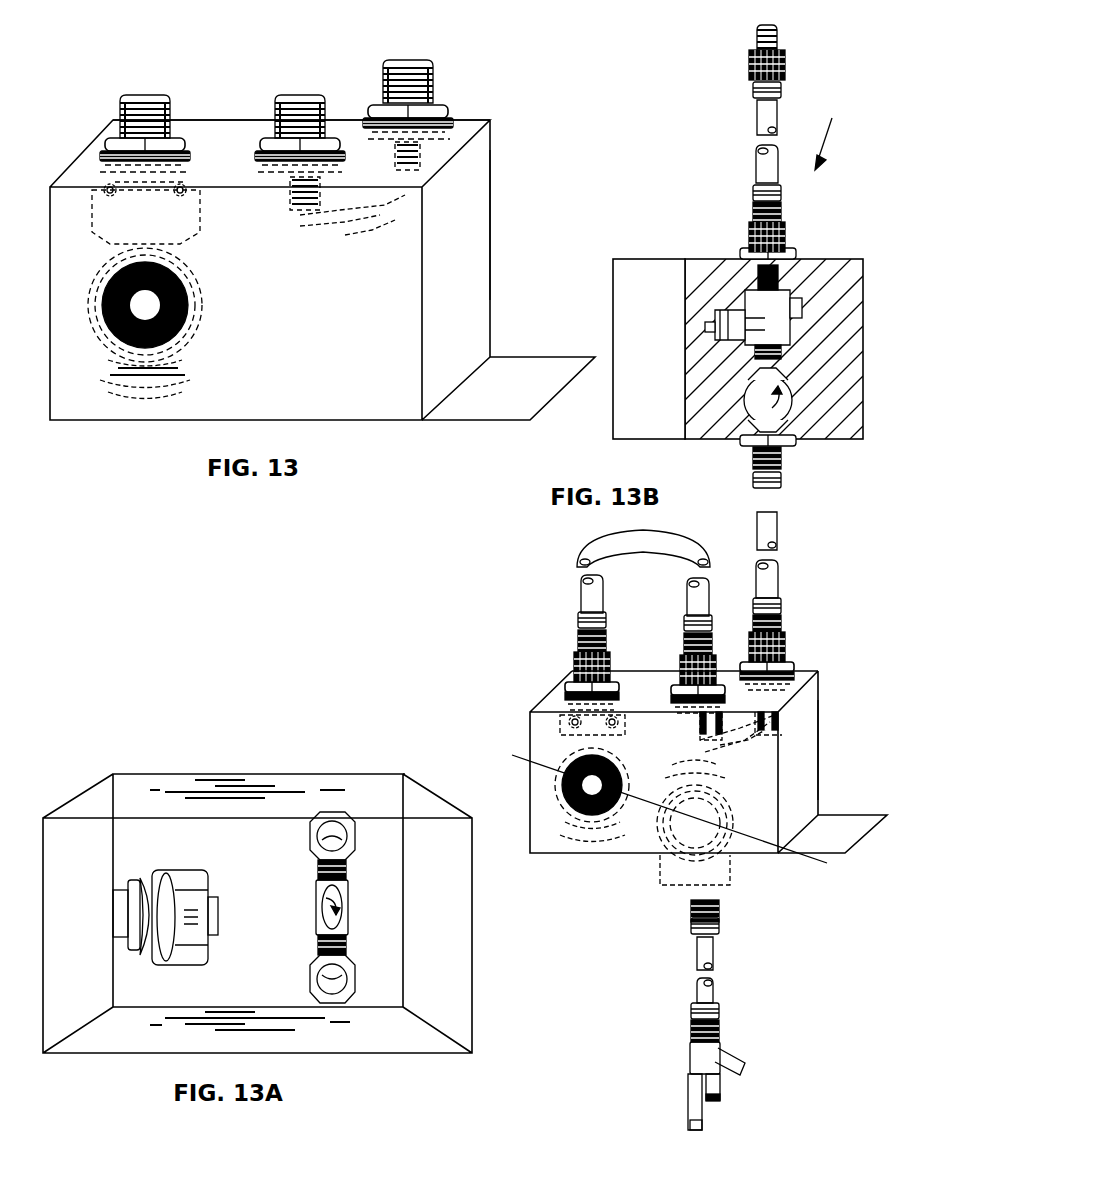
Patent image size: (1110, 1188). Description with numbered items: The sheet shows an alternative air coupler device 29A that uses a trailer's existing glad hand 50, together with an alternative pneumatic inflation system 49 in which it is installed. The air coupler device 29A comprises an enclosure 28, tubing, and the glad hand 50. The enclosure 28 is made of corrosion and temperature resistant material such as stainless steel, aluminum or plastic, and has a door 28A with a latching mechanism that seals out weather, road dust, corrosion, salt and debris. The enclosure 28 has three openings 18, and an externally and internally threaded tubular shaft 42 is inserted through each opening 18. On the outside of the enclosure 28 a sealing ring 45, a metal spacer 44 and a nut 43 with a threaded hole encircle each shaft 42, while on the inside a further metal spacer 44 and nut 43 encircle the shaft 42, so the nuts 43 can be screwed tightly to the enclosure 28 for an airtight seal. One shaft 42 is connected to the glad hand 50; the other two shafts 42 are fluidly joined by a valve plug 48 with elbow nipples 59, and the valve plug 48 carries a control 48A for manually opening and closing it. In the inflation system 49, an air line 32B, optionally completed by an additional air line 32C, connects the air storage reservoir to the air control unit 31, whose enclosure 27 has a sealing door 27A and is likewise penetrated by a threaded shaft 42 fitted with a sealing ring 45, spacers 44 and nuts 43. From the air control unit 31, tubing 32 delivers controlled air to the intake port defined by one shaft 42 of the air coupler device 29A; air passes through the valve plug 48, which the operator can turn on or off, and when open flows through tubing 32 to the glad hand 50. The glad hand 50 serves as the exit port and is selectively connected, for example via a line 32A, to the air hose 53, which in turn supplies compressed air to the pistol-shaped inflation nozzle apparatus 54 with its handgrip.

In FIG. 13, the opening 18 is at (188, 156).
In FIG. 13B, the opening 18 is at (805, 676).
In FIG. 13B, the enclosure 27 is at (700, 259).
In FIG. 13B, the door 27A is at (622, 259).
In FIG. 13, the enclosure 28 is at (490, 165).
In FIG. 13A, the enclosure 28 is at (435, 798).
In FIG. 13B, the enclosure 28 is at (820, 735).
In FIG. 13, the door 28A is at (522, 357).
In FIG. 13B, the door 28A is at (853, 817).
In FIG. 13, the air coupler device 29A is at (490, 247).
In FIG. 13A, the air coupler device 29A is at (406, 776).
In FIG. 13B, the air coupler device 29A is at (818, 786).
In FIG. 13B, the air control unit 31 is at (838, 260).
In FIG. 13B, the tubing 32 is at (780, 528).
In FIG. 13B, the line 32A is at (757, 202).
In FIG. 13B, the air line 32B is at (757, 112).
In FIG. 13B, the air line 32C is at (757, 42).
In FIG. 13, the tubular shaft 42 is at (132, 105).
In FIG. 13B, the tubular shaft 42 is at (786, 642).
In FIG. 13, the nut 43 is at (140, 143).
In FIG. 13A, the nut 43 is at (312, 835).
In FIG. 13B, the nut 43 is at (795, 664).
In FIG. 13, the metal spacer 44 is at (118, 152).
In FIG. 13B, the metal spacer 44 is at (796, 670).
In FIG. 13, the sealing ring 45 is at (104, 158).
In FIG. 13B, the sealing ring 45 is at (798, 674).
In FIG. 13, the valve plug 48 is at (342, 222).
In FIG. 13A, the valve plug 48 is at (348, 886).
In FIG. 13B, the valve plug 48 is at (733, 739).
In FIG. 13, the control 48A is at (366, 226).
In FIG. 13A, the control 48A is at (348, 913).
In FIG. 13B, the control 48A is at (749, 746).
In FIG. 13B, the pneumatic inflation system 49 is at (832, 130).
In FIG. 13, the glad hand 50 is at (205, 303).
In FIG. 13A, the glad hand 50 is at (177, 875).
In FIG. 13B, the glad hand 50 is at (735, 812).
In FIG. 13B, the air hose 53 is at (697, 952).
In FIG. 13B, the inflation nozzle apparatus 54 is at (690, 1066).
In FIG. 13, the elbow nipple 59 is at (290, 222).
In FIG. 13A, the elbow nipple 59 is at (346, 855).
In FIG. 13B, the elbow nipple 59 is at (695, 725).